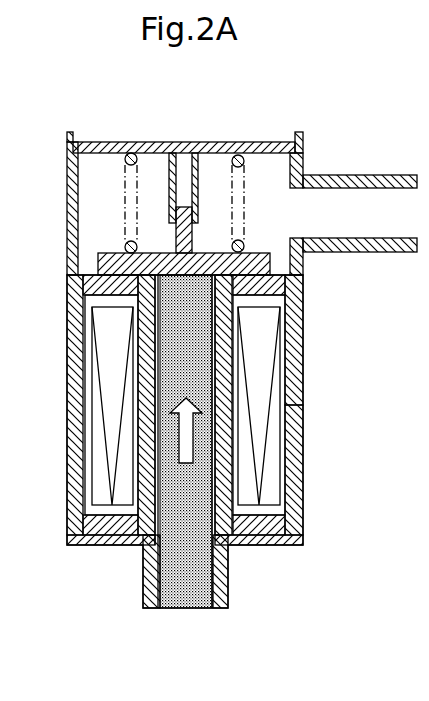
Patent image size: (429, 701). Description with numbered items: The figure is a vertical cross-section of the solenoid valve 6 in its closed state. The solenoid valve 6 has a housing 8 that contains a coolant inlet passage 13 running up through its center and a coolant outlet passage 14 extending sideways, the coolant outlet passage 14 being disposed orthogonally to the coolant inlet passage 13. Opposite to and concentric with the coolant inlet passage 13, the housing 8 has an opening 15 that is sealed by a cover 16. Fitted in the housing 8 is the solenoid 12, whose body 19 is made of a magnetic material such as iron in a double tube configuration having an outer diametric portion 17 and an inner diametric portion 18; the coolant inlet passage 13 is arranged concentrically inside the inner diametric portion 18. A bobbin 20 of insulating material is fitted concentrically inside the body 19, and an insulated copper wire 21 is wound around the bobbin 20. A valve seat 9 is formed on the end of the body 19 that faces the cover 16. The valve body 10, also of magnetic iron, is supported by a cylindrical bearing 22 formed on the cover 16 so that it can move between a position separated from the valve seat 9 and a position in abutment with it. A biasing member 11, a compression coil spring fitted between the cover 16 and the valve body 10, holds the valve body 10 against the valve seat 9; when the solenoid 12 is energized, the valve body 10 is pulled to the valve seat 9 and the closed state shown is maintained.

The solenoid valve 6 is at (339, 118).
The housing 8 is at (303, 352).
The valve seat 9 is at (296, 250).
The valve body 10 is at (100, 262).
The biasing member 11 is at (131, 152).
The solenoid 12 is at (292, 408).
The coolant inlet passage 13 is at (193, 568).
The coolant outlet passage 14 is at (384, 204).
The opening 15 is at (73, 135).
The cover 16 is at (268, 142).
The outer diametric portion 17 is at (291, 481).
The inner diametric portion 18 is at (293, 441).
The body 19 is at (373, 436).
The bobbin 20 is at (88, 490).
The insulated copper wire 21 is at (97, 420).
The cylindrical bearing 22 is at (198, 178).